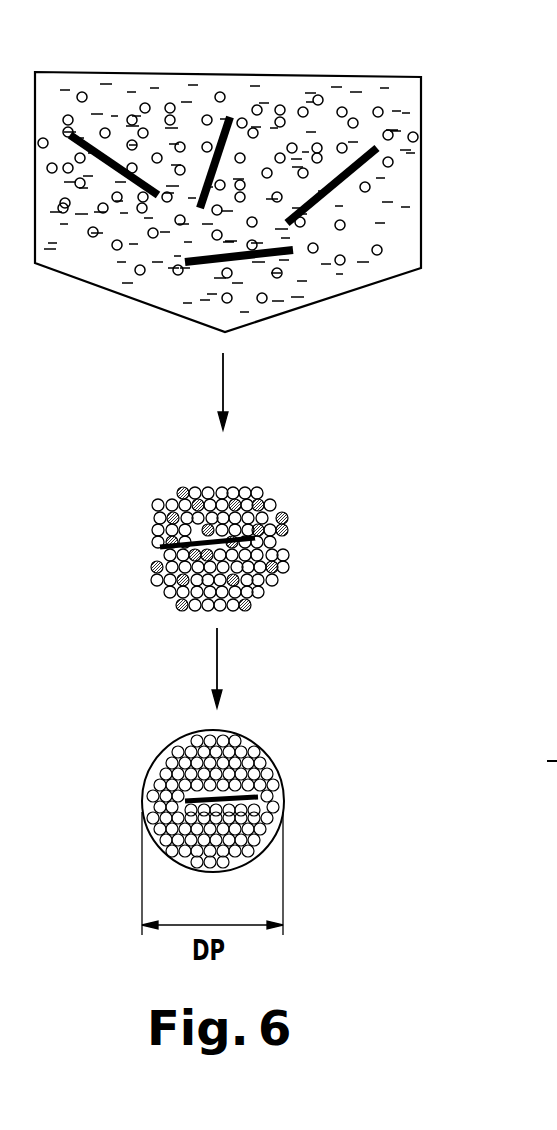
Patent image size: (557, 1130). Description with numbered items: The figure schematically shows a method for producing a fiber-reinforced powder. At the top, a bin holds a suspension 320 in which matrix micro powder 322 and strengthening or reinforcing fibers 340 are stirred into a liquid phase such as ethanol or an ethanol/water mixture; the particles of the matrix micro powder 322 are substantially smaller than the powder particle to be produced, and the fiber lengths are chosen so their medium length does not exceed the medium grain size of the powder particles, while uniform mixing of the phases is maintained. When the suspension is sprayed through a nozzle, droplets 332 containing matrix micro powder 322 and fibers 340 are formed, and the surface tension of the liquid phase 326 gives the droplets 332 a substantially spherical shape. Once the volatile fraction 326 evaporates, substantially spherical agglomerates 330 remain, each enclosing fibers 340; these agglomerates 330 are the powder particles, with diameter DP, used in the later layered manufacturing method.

The suspension / mixture in container 320 is at (183, 110).
The matrix micro powder 322 is at (378, 108).
The liquid phase 326 is at (280, 505).
The powder particle 330 is at (258, 762).
The droplets 332 is at (271, 583).
The reinforcing fibers 340 is at (288, 258).